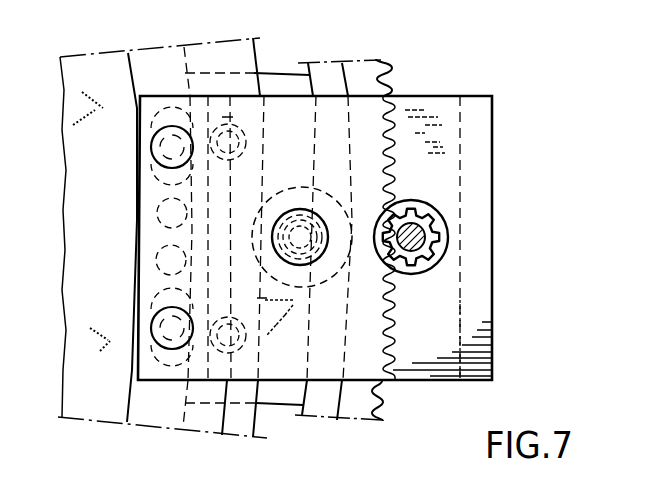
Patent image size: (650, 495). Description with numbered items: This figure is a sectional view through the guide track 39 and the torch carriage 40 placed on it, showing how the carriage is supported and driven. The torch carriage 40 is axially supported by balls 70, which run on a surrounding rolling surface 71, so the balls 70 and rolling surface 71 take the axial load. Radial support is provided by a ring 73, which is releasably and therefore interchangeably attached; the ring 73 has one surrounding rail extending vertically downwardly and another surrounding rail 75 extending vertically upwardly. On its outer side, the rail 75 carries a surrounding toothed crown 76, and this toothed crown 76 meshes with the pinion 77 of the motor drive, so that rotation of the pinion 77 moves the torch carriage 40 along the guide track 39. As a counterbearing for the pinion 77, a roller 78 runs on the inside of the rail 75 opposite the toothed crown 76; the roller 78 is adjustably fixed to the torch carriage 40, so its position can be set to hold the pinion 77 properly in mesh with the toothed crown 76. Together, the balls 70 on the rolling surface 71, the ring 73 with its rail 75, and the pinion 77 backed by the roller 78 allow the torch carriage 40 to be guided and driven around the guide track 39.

The guide track 39 is at (87, 146).
The torch carriage 40 is at (473, 170).
The balls 70 is at (160, 225).
The rolling surface 71 is at (163, 412).
The ring 73 is at (278, 80).
The rail 75 is at (356, 80).
The toothed crown 76 is at (392, 70).
The pinion 77 is at (447, 238).
The roller 78 is at (335, 262).